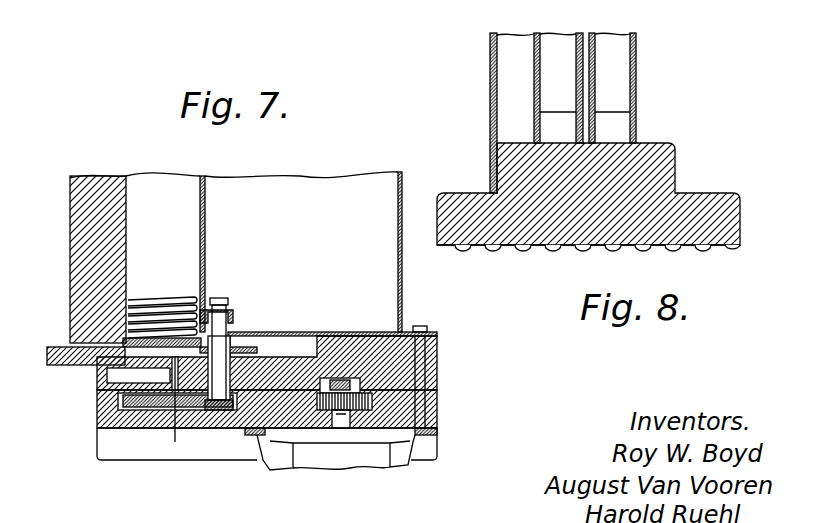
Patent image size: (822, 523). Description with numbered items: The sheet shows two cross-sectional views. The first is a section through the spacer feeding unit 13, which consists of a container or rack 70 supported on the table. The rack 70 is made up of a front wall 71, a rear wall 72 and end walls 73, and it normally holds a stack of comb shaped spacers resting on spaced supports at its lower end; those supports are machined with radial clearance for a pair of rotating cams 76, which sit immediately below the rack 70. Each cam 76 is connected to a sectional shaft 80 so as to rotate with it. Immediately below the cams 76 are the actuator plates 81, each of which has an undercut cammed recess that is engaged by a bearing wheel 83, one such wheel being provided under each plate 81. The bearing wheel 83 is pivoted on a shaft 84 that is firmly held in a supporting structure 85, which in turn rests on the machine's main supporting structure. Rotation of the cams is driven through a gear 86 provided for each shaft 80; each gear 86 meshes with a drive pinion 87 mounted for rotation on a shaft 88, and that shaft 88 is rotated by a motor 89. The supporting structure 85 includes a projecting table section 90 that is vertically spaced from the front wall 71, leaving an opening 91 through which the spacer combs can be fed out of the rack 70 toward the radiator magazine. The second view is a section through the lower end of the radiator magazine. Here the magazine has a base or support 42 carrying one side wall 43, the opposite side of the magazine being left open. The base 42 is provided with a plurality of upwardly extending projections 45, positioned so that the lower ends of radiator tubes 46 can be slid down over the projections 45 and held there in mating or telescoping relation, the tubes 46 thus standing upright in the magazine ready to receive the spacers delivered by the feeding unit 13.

In FIG. 7, the container or rack 70 is at (131, 150).
In FIG. 7, the front wall 71 is at (70, 178).
In FIG. 7, the rear wall 72 is at (206, 180).
In FIG. 7, the end walls 73 is at (305, 186).
In FIG. 7, the rotating cams 76 is at (113, 370).
In FIG. 7, the sectional shaft 80 is at (262, 360).
In FIG. 7, the actuator plates 81 is at (247, 340).
In FIG. 7, the bearing wheel 83 is at (172, 406).
In FIG. 7, the shaft 84 is at (97, 402).
In FIG. 7, the supporting structure 85 is at (100, 455).
In FIG. 7, the gear 86 is at (255, 437).
In FIG. 7, the drive pinion 87 is at (362, 428).
In FIG. 7, the shaft 88 is at (343, 428).
In FIG. 7, the motor 89 is at (315, 455).
In FIG. 7, the projecting table section 90 is at (53, 365).
In FIG. 7, the opening 91 is at (75, 343).
In FIG. 7, the spacer feeding unit 13 is at (449, 380).
In FIG. 8, the base or support 42 is at (728, 198).
In FIG. 8, the side wall 43 is at (537, 98).
In FIG. 8, the projections 45 is at (620, 126).
In FIG. 8, the radiator tubes 46 is at (608, 40).